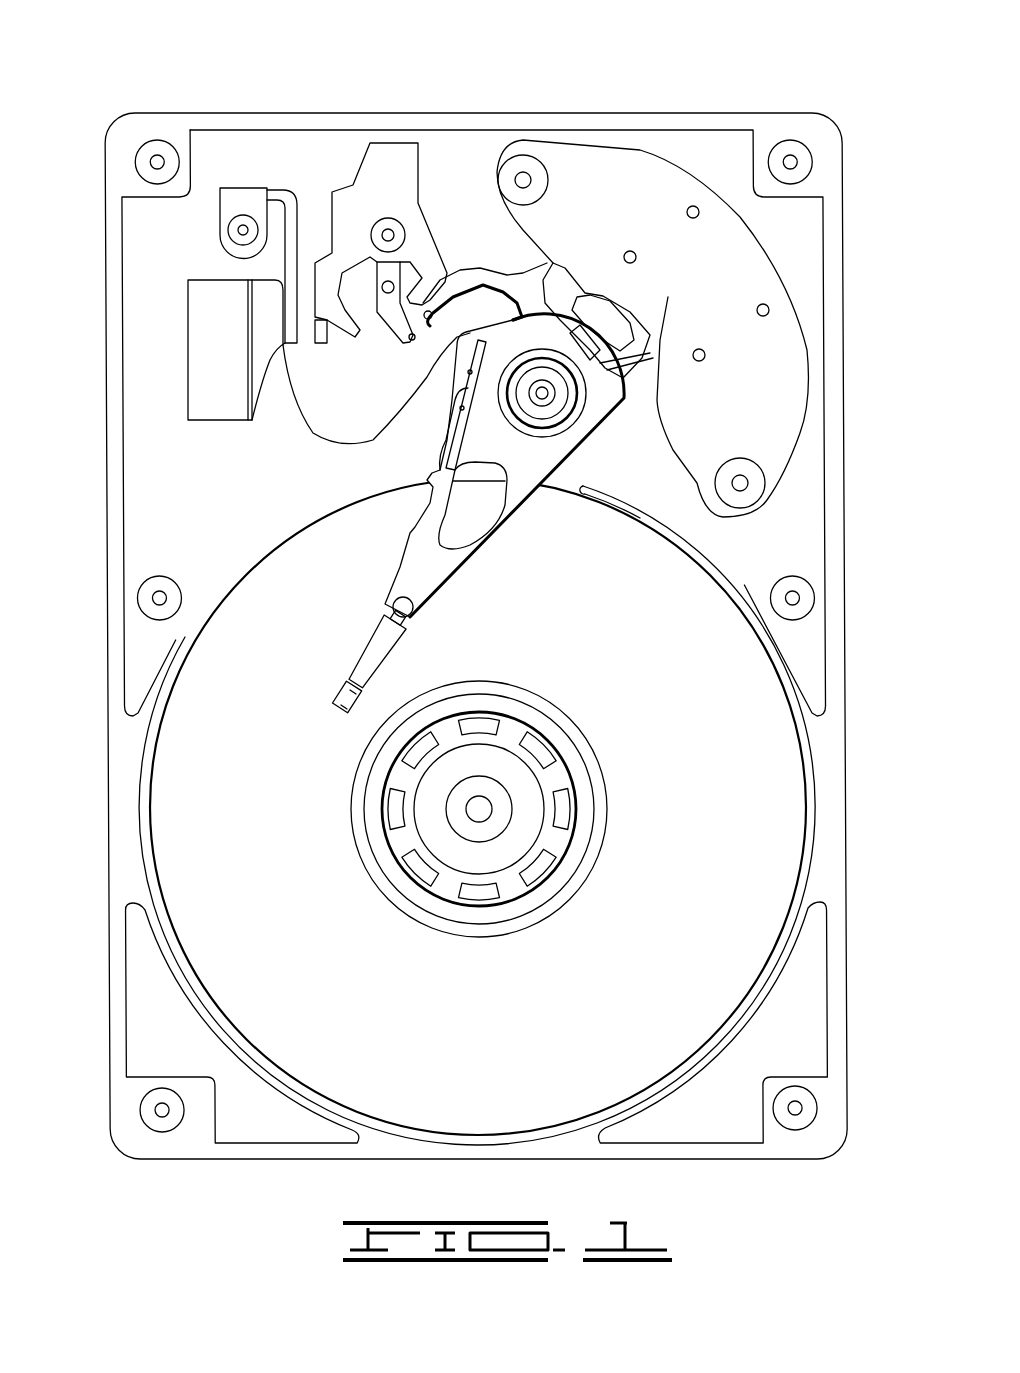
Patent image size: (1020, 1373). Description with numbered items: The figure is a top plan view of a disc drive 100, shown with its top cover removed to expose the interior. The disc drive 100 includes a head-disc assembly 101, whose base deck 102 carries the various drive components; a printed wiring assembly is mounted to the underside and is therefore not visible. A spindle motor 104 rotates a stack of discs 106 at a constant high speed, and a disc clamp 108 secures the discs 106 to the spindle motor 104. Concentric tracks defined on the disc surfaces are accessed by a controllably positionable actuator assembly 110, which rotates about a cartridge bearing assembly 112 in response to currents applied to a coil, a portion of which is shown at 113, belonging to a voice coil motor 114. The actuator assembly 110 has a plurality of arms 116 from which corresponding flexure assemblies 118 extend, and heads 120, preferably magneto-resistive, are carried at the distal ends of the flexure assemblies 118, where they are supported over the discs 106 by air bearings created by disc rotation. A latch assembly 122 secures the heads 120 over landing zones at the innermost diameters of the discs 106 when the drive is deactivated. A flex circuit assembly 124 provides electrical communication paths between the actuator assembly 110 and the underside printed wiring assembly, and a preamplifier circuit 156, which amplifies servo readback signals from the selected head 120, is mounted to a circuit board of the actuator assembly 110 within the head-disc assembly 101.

The disc drive 100 is at (222, 90).
The head-disc assembly 101 is at (128, 182).
The base deck 102 is at (207, 497).
The spindle motor 104 is at (483, 836).
The discs 106 is at (735, 905).
The disc clamp 108 is at (372, 862).
The actuator assembly 110 is at (512, 466).
The cartridge bearing assembly 112 is at (551, 410).
The coil 113 is at (640, 345).
The voice coil motor 114 is at (578, 212).
The arms 116 is at (412, 586).
The flexure assemblies 118 is at (360, 672).
The heads 120 is at (330, 700).
The latch assembly 122 is at (391, 162).
The flex circuit assembly 124 is at (322, 455).
The preamplifier circuit 156 is at (448, 405).